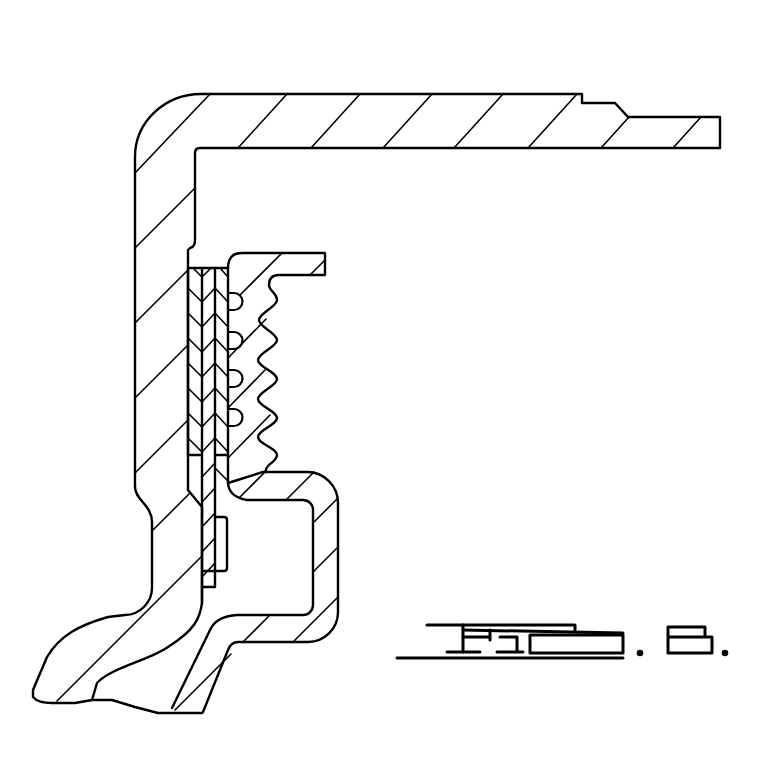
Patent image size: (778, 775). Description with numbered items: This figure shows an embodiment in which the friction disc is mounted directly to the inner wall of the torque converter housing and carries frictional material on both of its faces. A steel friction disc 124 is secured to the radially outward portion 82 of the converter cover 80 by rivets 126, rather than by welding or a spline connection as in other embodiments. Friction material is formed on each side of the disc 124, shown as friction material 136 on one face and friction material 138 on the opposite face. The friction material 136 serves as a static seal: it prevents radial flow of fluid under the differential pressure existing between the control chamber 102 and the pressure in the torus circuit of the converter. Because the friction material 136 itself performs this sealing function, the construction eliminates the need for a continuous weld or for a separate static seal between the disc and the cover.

The converter cover 80 is at (388, 106).
The radially outward portion of the converter cover 82 is at (157, 492).
The control chamber 102 is at (290, 594).
The steel friction disc 124 is at (208, 482).
The rivets 126 is at (220, 541).
The friction material 136 is at (192, 318).
The friction material 138 is at (217, 318).